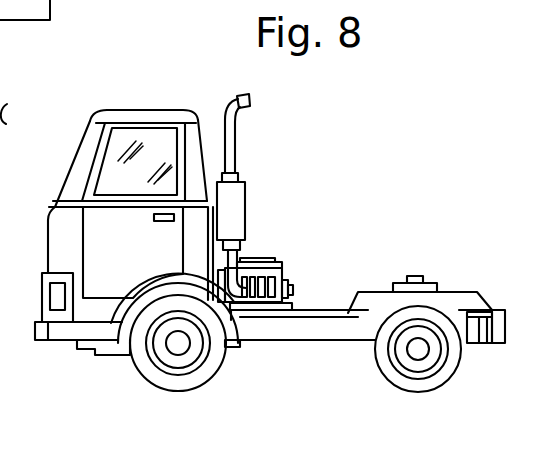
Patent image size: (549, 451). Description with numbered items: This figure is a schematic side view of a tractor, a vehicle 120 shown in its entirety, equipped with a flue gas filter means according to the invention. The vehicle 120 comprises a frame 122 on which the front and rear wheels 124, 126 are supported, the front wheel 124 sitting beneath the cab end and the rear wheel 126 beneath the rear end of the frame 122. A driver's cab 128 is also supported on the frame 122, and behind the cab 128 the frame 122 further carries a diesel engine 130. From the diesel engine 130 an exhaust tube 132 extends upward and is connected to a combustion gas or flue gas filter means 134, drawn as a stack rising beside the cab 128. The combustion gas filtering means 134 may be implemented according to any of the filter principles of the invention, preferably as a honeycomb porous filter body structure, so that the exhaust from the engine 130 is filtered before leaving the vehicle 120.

The vehicle 120 is at (124, 379).
The frame 122 is at (320, 310).
The front wheel 124 is at (212, 363).
The rear wheel 126 is at (385, 368).
The driver's cab 128 is at (64, 224).
The diesel engine 130 is at (265, 262).
The exhaust tube 132 is at (240, 255).
The flue gas filter means 134 is at (244, 200).